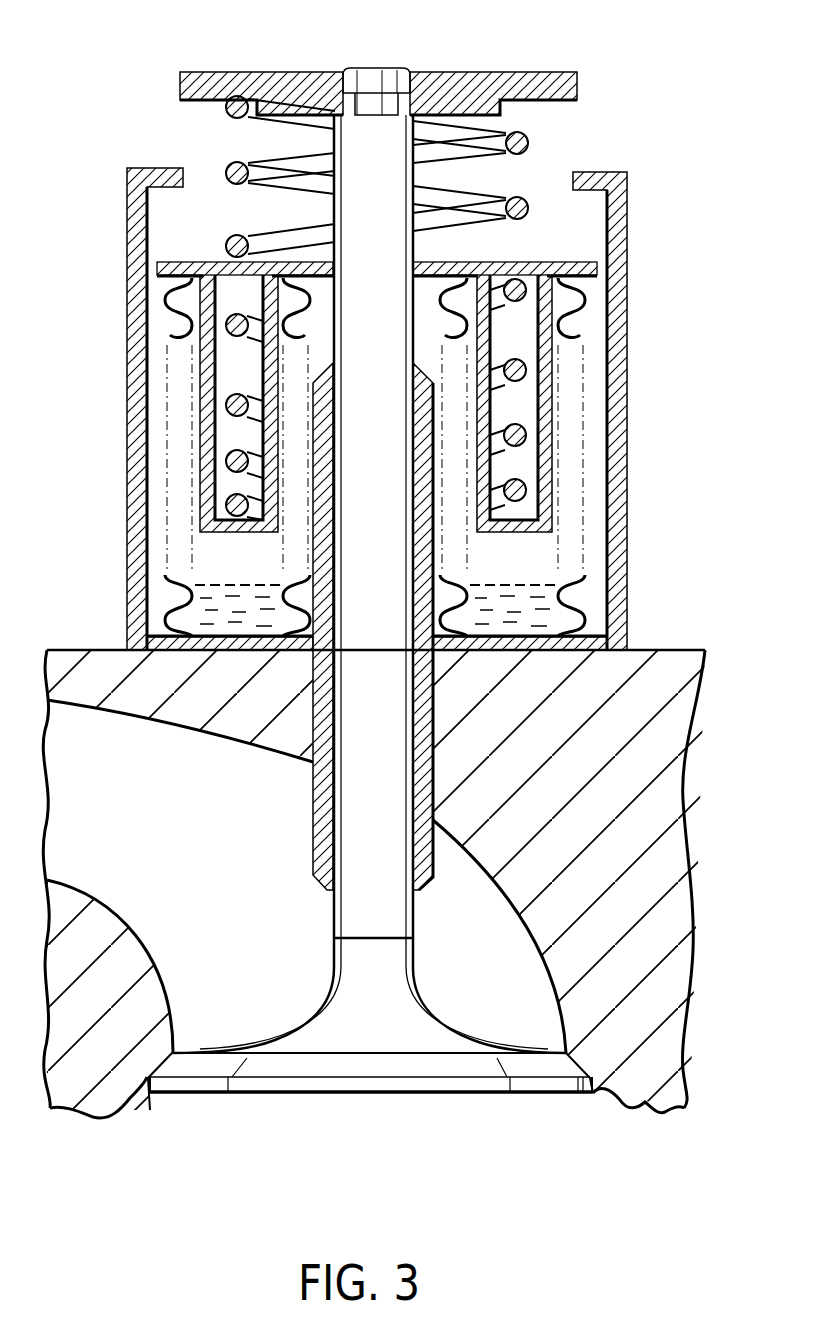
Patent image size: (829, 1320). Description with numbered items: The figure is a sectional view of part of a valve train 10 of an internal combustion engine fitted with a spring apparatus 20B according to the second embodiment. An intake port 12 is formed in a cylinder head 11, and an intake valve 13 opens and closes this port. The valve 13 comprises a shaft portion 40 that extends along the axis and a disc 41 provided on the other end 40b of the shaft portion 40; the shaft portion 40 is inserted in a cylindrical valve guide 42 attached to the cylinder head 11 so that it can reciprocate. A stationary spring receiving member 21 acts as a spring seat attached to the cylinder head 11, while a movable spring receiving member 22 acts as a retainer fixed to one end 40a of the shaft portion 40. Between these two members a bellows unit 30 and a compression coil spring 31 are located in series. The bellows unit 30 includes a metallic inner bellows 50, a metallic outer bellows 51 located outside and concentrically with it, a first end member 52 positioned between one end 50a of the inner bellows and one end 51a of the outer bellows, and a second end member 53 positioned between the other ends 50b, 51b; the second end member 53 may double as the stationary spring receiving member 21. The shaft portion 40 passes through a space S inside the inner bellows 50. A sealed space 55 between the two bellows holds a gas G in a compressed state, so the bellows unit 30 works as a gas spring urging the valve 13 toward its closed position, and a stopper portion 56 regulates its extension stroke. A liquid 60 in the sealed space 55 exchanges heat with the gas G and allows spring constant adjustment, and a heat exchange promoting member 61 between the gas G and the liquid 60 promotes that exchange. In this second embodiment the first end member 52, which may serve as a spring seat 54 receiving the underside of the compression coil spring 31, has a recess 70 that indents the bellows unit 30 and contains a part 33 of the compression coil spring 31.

The valve train 10 is at (665, 56).
The cylinder head 11 is at (663, 866).
The intake port 12 is at (528, 997).
The intake valve 13 is at (405, 1037).
The spring apparatus 20B is at (672, 260).
The stationary spring receiving member 21 is at (193, 645).
The movable spring receiving member 22 is at (215, 72).
The bellows unit 30 is at (160, 316).
The compression coil spring 31 is at (165, 268).
The part of compression coil spring 33 is at (222, 406).
The shaft portion 40 is at (355, 847).
The one end of shaft portion 40a is at (376, 93).
The other end of shaft portion 40b is at (334, 918).
The disc 41 is at (318, 1095).
The valve guide 42 is at (317, 737).
The inner bellows 50 is at (437, 328).
The one end of inner bellows 50a is at (443, 265).
The other end of inner bellows 50b is at (450, 640).
The outer bellows 51 is at (580, 314).
The one end of outer bellows 51a is at (590, 268).
The other end of outer bellows 51b is at (567, 637).
The first end member 52 is at (160, 266).
The second end member 53 is at (240, 643).
The spring seat 54 is at (200, 523).
The sealed space 55 is at (227, 555).
The stopper portion 56 is at (152, 170).
The liquid 60 is at (527, 615).
The heat exchange promoting member 61 is at (520, 583).
The recess 70 is at (527, 392).
The gas G is at (527, 548).
The space S is at (320, 268).